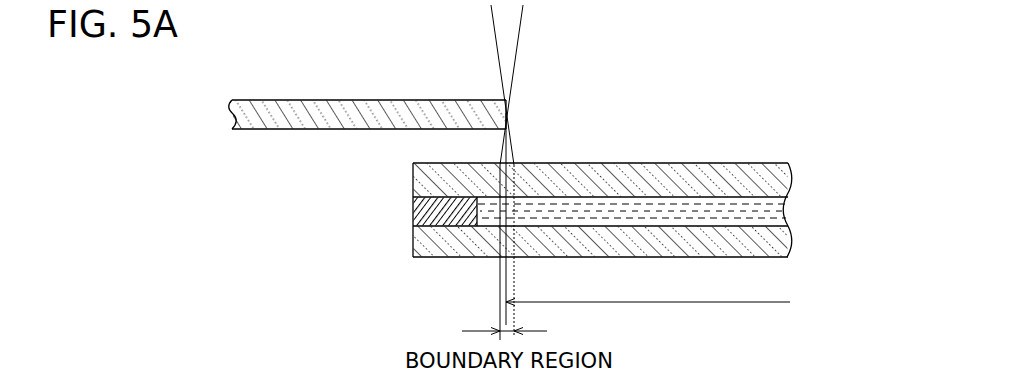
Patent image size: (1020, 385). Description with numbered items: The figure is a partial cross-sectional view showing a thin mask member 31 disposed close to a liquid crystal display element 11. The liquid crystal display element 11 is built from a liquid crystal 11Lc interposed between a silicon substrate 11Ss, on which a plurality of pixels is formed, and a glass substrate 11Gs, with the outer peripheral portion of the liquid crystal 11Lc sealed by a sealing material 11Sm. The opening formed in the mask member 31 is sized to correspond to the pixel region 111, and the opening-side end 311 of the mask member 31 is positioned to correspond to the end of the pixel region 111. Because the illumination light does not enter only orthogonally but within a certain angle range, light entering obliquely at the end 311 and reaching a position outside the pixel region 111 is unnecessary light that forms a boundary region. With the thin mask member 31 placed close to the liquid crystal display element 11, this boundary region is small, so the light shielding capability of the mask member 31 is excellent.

The thin mask member 31 is at (382, 98).
The opening-side end of the mask member 311 is at (508, 107).
The liquid crystal display element 11 is at (703, 162).
The glass substrate 11Gs is at (748, 172).
The liquid crystal 11Lc is at (647, 210).
The sealing material 11Sm is at (411, 203).
The silicon substrate 11Ss is at (766, 246).
The pixel region 111 is at (648, 289).